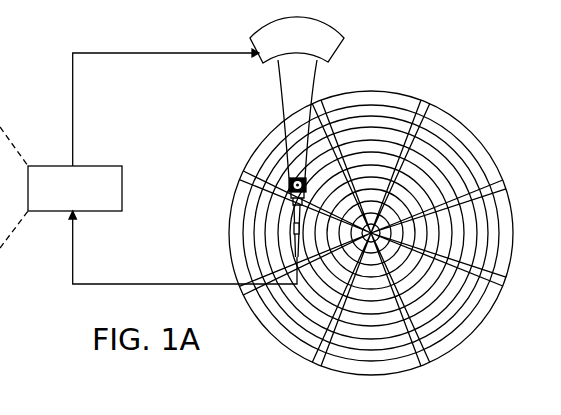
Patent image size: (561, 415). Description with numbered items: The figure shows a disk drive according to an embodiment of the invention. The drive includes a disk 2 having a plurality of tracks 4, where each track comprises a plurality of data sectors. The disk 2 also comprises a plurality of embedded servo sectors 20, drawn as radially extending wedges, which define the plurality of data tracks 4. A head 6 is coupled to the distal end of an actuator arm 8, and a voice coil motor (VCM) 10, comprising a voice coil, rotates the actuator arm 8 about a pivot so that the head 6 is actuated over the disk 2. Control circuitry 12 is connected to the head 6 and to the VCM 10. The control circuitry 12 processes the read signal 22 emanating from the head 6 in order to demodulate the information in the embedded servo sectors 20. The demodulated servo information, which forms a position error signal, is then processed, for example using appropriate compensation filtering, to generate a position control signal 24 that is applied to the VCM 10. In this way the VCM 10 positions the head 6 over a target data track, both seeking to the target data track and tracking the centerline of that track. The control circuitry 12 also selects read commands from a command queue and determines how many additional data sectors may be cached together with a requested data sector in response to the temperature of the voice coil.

The disk 2 is at (376, 228).
The tracks 4 is at (373, 108).
The head 6 is at (293, 235).
The actuator arm 8 is at (283, 108).
The voice coil motor (VCM) 10 is at (263, 62).
The control circuitry 12 is at (100, 165).
The embedded servo sectors 20 is at (376, 236).
The read signal 22 is at (157, 283).
The position control signal 24 is at (72, 102).